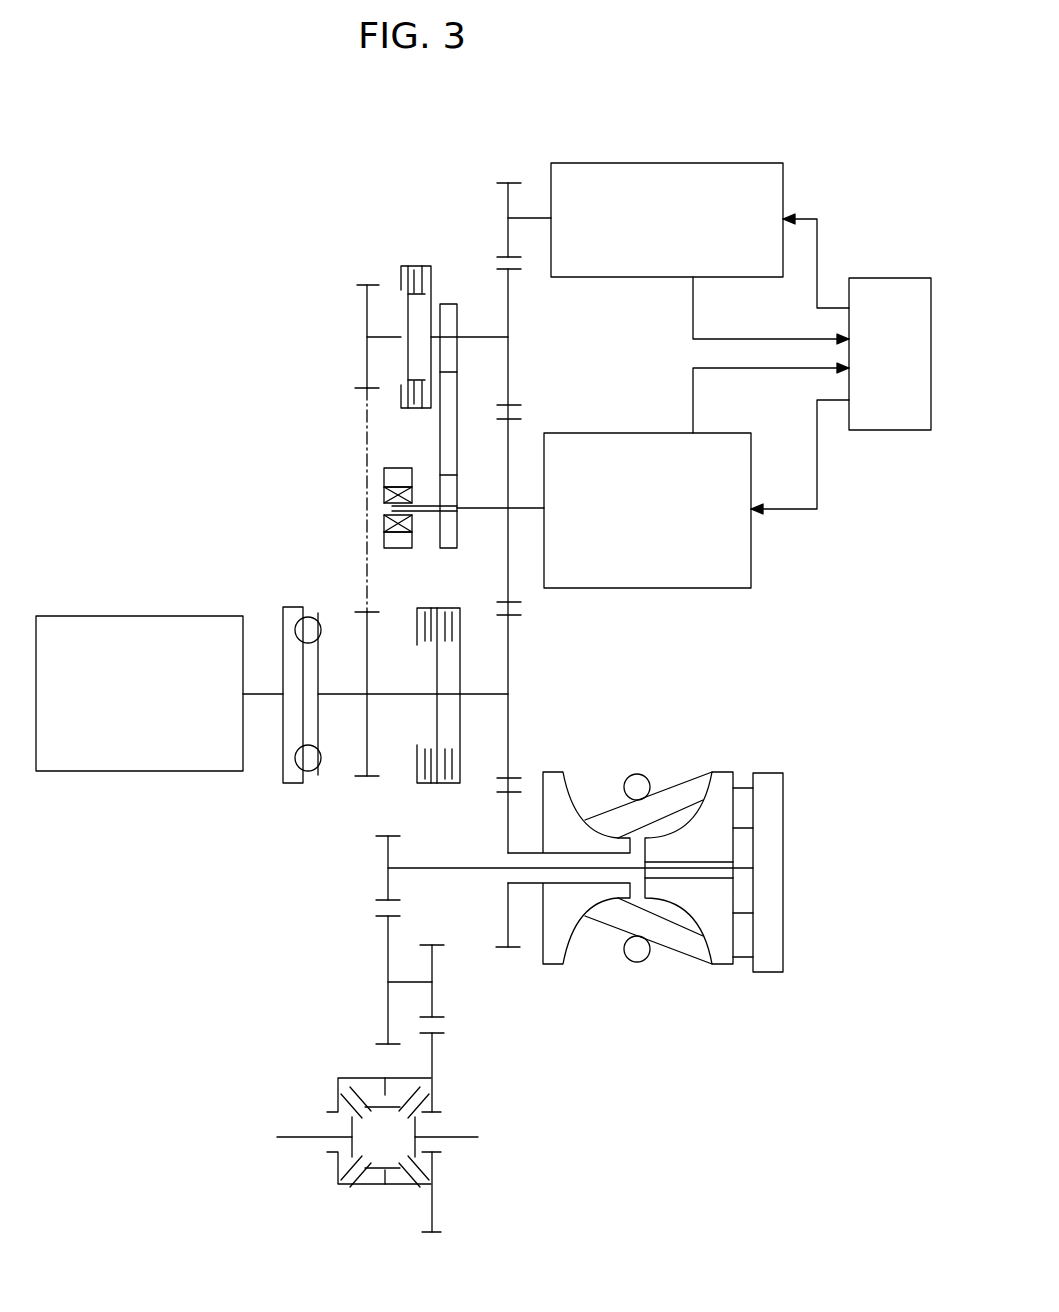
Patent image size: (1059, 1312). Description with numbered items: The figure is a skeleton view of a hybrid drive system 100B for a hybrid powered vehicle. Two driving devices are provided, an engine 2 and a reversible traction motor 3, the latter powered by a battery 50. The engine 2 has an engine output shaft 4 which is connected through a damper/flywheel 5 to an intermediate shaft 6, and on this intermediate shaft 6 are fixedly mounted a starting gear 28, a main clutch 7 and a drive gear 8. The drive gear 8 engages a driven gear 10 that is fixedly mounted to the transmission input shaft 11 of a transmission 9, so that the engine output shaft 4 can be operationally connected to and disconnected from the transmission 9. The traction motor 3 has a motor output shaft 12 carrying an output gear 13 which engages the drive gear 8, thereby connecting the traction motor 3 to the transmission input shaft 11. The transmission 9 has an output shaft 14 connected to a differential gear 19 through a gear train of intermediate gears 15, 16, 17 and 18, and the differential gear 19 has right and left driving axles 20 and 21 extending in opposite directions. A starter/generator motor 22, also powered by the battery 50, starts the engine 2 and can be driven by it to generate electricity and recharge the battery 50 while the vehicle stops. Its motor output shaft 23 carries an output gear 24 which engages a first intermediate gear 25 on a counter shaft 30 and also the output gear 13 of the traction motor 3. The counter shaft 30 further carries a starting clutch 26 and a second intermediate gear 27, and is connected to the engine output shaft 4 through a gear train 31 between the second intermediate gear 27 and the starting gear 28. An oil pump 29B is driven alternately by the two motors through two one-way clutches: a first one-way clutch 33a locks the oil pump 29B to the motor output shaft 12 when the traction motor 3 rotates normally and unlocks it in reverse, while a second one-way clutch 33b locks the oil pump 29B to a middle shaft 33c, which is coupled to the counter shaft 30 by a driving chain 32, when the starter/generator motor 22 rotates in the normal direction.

The hybrid drive system 100B is at (207, 325).
The engine 2 is at (67, 616).
The traction motor 3 is at (748, 433).
The engine output shaft 4 is at (256, 694).
The damper/flywheel 5 is at (283, 607).
The intermediate shaft 6 is at (397, 694).
The main clutch 7 is at (417, 783).
The drive gear 8 is at (522, 615).
The transmission 9 is at (672, 762).
The driven gear 10 is at (496, 792).
The transmission input shaft 11 is at (522, 853).
The motor output shaft 12 is at (526, 510).
The output gear 13 is at (522, 412).
The output shaft 14 is at (467, 868).
The intermediate gear 15 is at (380, 838).
The intermediate gear 16 is at (380, 918).
The intermediate gear 17 is at (444, 946).
The intermediate gear 18 is at (441, 1034).
The differential gear 19 is at (332, 1082).
The driving axle 20 is at (290, 1137).
The driving axle 21 is at (473, 1137).
The starter/generator motor 22 is at (755, 163).
The motor output shaft 23 is at (531, 218).
The output gear 24 is at (498, 183).
The first intermediate gear 25 is at (520, 270).
The starting clutch 26 is at (401, 266).
The second intermediate gear 27 is at (358, 285).
The starting gear 28 is at (355, 776).
The oil pump 29B is at (384, 468).
The counter shaft 30 is at (481, 337).
The gear train 31 is at (358, 428).
The driving chain 32 is at (457, 402).
The first one-way clutch 33a is at (385, 522).
The second one-way clutch 33b is at (412, 532).
The middle shaft 33c is at (425, 506).
The battery 50 is at (910, 278).